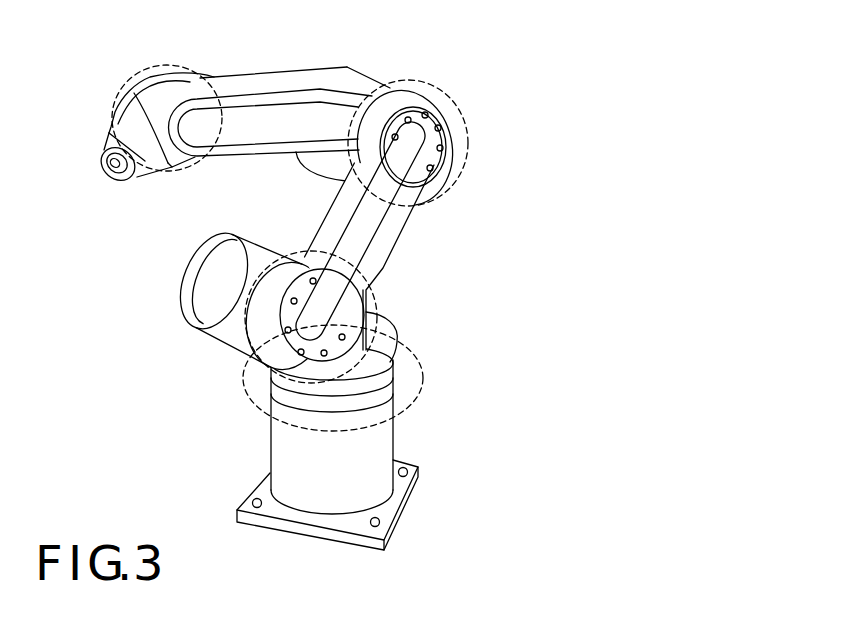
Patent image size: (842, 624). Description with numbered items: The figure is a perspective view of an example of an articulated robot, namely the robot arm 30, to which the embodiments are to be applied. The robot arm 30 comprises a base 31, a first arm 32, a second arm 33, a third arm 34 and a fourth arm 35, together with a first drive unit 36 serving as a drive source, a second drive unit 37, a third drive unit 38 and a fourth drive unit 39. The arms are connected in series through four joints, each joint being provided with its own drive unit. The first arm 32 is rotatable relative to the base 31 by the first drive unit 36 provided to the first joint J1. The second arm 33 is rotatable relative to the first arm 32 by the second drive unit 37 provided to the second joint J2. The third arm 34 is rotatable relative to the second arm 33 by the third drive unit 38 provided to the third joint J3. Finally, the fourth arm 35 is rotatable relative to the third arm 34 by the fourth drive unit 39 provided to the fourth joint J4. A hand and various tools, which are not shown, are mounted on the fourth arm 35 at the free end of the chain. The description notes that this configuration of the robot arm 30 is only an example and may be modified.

The robot arm 30 is at (301, 276).
The base 31 is at (385, 440).
The first arm 32 is at (367, 295).
The second arm 33 is at (380, 232).
The third arm 34 is at (273, 84).
The fourth arm 35 is at (135, 117).
The first drive unit 36 is at (386, 364).
The second drive unit 37 is at (248, 253).
The third drive unit 38 is at (320, 165).
The fourth drive unit 39 is at (137, 92).
The first joint J1 is at (255, 398).
The second joint J2 is at (247, 334).
The third joint J3 is at (467, 140).
The fourth joint J4 is at (132, 74).